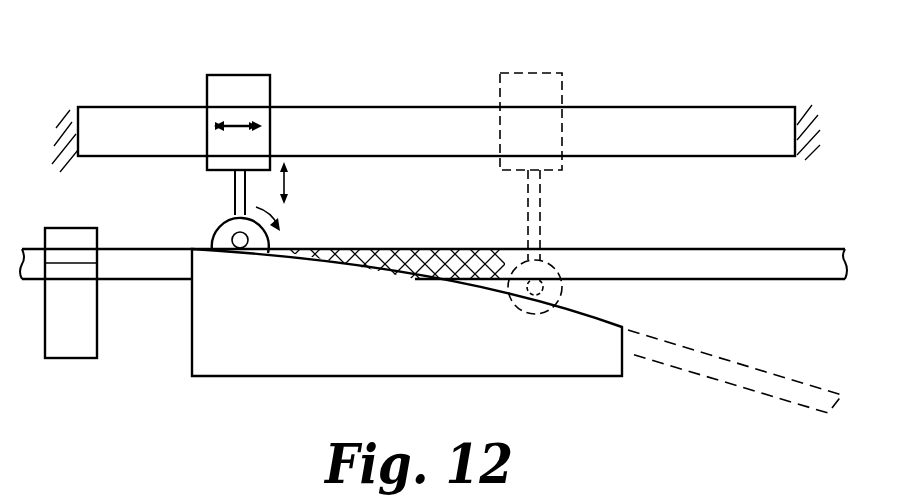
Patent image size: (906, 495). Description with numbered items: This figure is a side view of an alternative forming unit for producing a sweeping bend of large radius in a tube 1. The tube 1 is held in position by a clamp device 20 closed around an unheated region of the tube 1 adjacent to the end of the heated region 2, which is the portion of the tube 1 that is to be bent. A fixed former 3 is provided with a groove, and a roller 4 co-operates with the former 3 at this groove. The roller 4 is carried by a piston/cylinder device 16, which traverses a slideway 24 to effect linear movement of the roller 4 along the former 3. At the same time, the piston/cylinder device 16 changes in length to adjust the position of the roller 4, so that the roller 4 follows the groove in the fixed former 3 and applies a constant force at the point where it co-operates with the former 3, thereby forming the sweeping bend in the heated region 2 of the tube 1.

The tube 1 is at (776, 263).
The heated region 2 is at (408, 248).
The fixed former 3 is at (583, 365).
The roller 4 is at (213, 232).
The piston/cylinder device 16 is at (270, 90).
The clamp device 20 is at (85, 338).
The slideway 24 is at (667, 106).